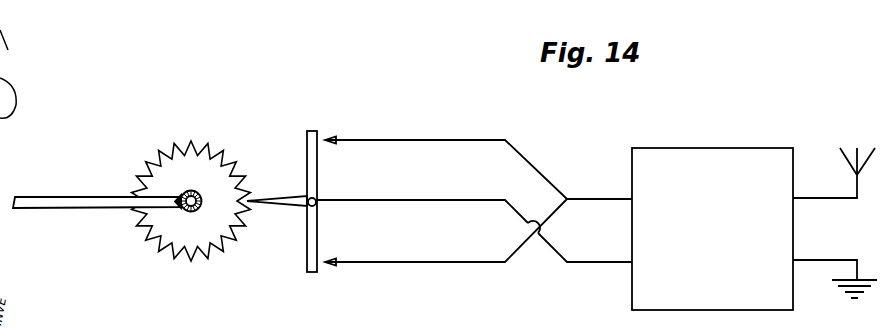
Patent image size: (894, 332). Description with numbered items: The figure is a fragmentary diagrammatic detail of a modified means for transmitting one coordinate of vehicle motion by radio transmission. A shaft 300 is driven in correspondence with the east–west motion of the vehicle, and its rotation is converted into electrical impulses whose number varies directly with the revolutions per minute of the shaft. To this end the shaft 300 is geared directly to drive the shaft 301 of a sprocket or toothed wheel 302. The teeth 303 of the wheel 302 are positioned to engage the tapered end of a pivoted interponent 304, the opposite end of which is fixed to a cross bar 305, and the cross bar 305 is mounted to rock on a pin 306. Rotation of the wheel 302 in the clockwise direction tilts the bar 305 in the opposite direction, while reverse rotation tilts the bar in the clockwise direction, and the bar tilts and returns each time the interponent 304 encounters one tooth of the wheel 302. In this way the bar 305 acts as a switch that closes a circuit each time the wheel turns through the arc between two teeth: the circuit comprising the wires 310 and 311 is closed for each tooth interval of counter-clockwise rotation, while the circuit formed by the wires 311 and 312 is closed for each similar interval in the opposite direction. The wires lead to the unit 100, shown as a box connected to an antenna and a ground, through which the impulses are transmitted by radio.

The receiver/control unit 100 is at (712, 229).
The shaft 300 is at (53, 197).
The drive shaft 301 is at (199, 196).
The toothed wheel 302 is at (200, 155).
The teeth 303 is at (228, 247).
The interponent 304 is at (275, 197).
The cross bar 305 is at (315, 184).
The pin 306 is at (316, 213).
The wire 310 is at (435, 140).
The wire 311 is at (430, 198).
The wire 312 is at (425, 263).